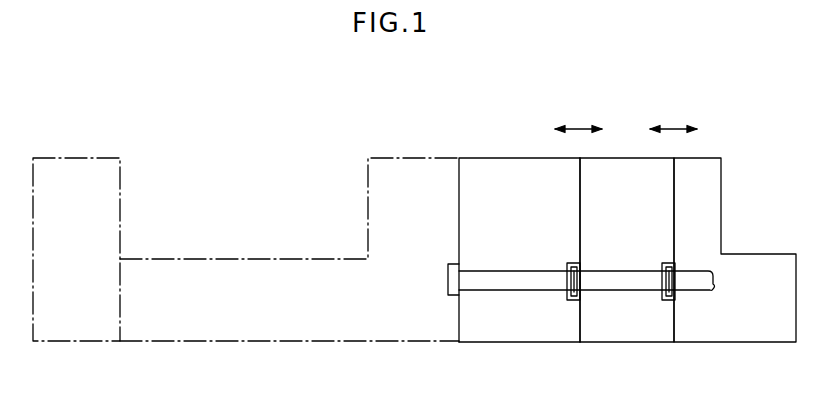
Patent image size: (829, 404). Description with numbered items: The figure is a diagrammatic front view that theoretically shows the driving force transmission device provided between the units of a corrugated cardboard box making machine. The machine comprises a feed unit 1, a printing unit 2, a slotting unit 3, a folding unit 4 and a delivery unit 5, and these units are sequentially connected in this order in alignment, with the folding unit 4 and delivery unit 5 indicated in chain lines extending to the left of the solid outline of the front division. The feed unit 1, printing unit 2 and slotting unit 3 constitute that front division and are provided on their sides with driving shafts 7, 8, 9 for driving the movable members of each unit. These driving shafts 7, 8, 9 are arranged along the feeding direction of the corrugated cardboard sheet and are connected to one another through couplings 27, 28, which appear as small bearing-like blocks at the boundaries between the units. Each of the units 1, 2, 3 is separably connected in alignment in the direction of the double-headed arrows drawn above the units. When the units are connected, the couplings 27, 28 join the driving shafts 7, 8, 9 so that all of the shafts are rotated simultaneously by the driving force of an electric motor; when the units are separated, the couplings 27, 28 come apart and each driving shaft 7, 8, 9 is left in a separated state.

The feed unit 1 is at (743, 250).
The printing unit 2 is at (617, 158).
The slotting unit 3 is at (512, 158).
The folding unit 4 is at (262, 256).
The delivery unit 5 is at (126, 160).
The driving shaft 7 is at (692, 271).
The driving shaft 8 is at (617, 271).
The driving shaft 9 is at (504, 271).
The coupling 27 is at (670, 303).
The coupling 28 is at (572, 303).